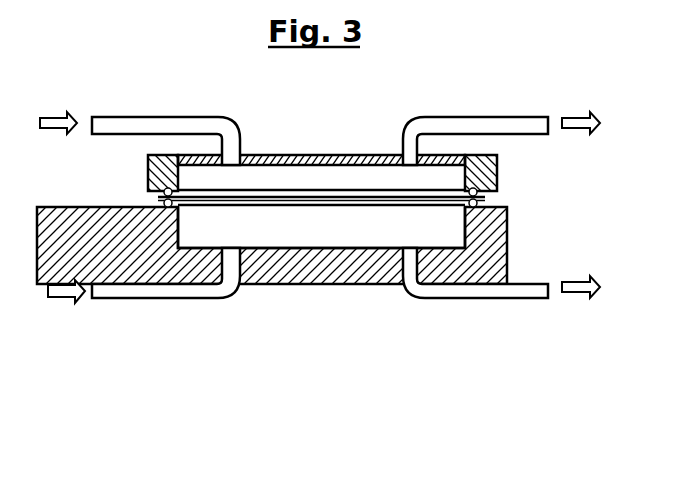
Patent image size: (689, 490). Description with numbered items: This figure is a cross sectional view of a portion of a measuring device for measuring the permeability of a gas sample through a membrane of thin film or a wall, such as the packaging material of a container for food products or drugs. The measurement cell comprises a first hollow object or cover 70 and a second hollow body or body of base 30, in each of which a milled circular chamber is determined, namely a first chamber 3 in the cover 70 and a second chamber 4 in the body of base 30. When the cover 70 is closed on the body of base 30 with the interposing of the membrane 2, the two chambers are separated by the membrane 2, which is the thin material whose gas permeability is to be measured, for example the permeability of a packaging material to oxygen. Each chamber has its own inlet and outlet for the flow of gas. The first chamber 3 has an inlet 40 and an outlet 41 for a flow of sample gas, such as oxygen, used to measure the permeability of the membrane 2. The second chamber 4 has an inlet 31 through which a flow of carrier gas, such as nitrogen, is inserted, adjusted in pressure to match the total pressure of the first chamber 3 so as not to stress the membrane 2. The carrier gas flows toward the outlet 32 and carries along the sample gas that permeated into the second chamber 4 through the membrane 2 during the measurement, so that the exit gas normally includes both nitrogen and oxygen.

The membrane 2 is at (340, 192).
The first chamber 3 is at (283, 163).
The second chamber 4 is at (338, 243).
The body of base 30 is at (300, 284).
The inlet 31 is at (173, 293).
The outlet 32 is at (488, 287).
The inlet 40 is at (153, 117).
The outlet 41 is at (490, 117).
The cover 70 is at (257, 155).